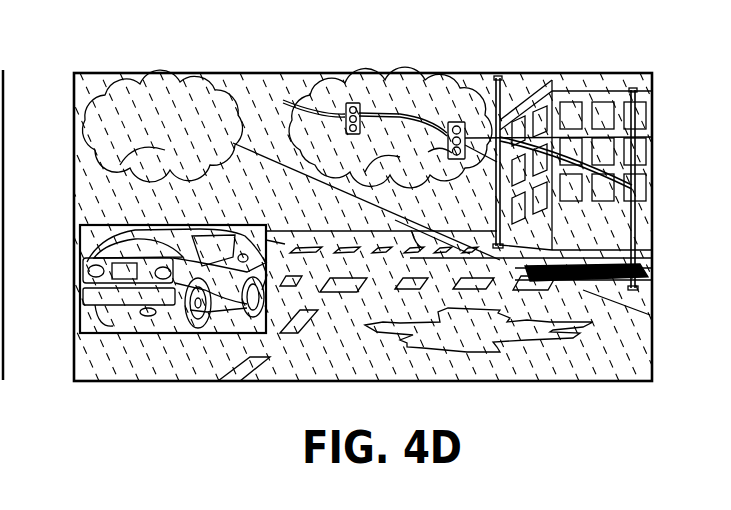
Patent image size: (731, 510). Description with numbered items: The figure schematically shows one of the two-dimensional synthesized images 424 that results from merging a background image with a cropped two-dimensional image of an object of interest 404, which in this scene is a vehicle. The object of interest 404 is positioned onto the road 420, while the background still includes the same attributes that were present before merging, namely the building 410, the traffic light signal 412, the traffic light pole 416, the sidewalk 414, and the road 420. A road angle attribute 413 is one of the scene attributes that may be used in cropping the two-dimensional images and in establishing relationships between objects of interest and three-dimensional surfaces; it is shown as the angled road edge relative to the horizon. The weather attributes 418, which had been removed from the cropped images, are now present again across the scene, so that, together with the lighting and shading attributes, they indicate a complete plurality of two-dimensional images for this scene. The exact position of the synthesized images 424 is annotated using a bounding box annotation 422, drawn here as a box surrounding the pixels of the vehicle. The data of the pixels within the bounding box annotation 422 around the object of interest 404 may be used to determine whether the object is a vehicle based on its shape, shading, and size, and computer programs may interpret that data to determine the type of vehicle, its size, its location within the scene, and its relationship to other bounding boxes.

The object of interest 404 is at (195, 334).
The building 410 is at (588, 110).
The traffic light signal 412 is at (296, 108).
The road angle attribute 413 is at (345, 192).
The sidewalk 414 is at (514, 254).
The traffic light pole 416 is at (641, 166).
The weather attributes 418 is at (251, 117).
The road 420 is at (366, 357).
The bounding box annotation 422 is at (108, 222).
The 2D synthesized images 424 is at (462, 62).